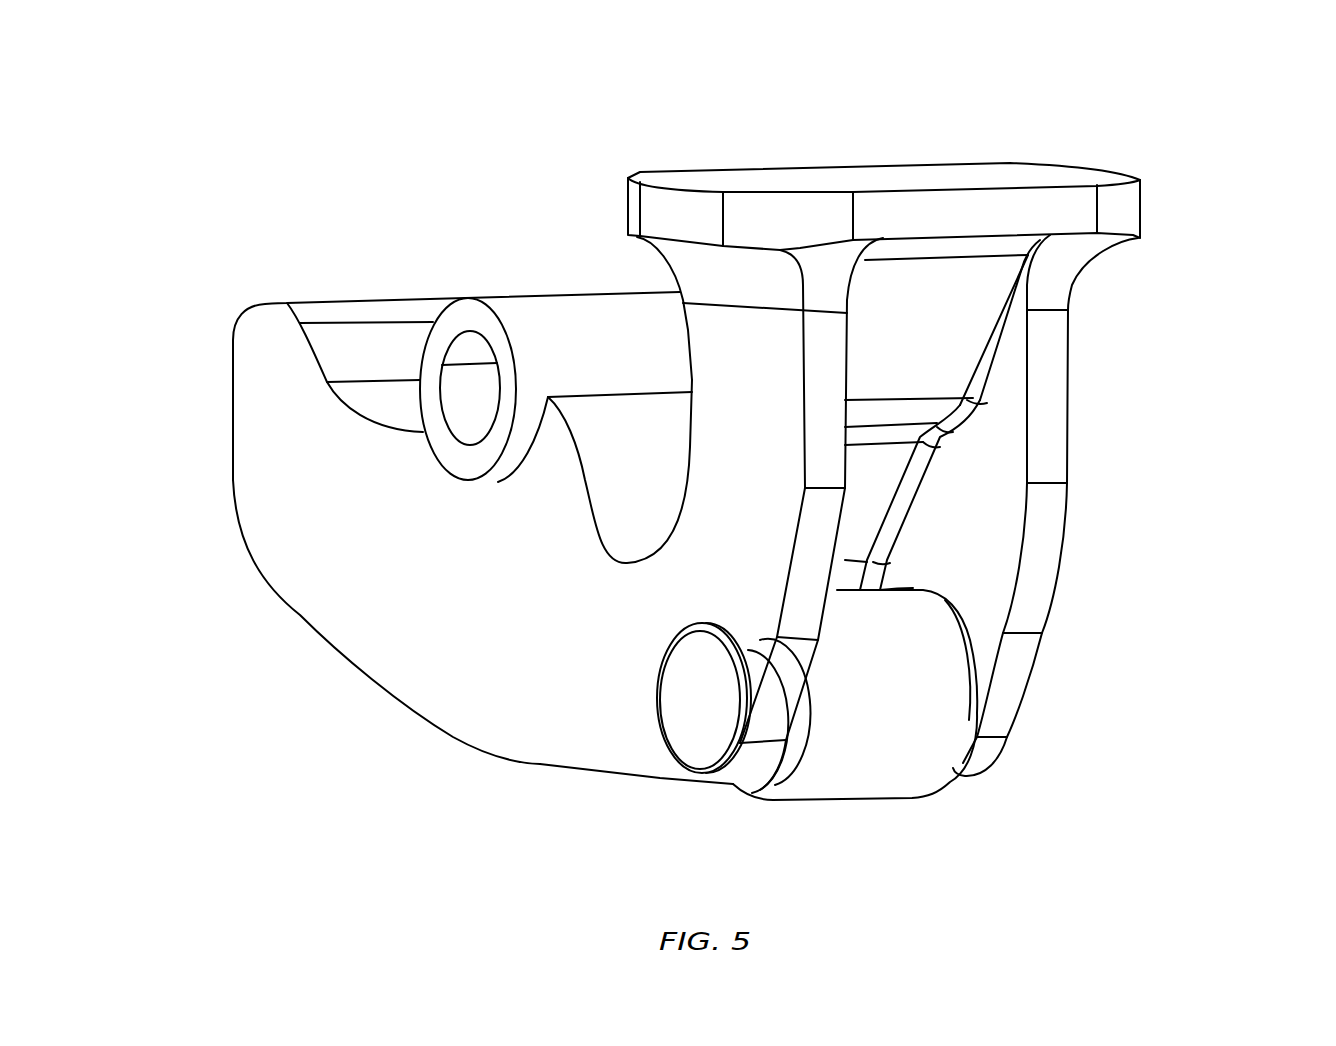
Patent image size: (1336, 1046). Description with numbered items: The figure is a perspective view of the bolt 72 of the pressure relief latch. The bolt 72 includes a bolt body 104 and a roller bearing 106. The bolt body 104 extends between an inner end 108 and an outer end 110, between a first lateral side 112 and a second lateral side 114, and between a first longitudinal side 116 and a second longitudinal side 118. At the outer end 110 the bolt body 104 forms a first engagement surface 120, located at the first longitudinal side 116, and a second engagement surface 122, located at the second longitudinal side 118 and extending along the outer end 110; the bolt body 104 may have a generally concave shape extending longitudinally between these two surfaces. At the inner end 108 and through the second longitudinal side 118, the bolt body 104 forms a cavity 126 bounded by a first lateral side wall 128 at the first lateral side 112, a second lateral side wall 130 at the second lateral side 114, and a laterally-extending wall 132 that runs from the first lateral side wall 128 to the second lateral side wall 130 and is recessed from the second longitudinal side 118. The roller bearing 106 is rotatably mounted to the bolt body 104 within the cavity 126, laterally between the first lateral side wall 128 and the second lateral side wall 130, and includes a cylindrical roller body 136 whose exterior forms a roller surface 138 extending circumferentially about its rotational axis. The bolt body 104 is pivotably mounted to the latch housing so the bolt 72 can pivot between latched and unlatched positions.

The bolt 72 is at (1222, 119).
The outer end 110 is at (616, 138).
The second engagement surface 122 is at (980, 172).
The second lateral side wall 130 is at (717, 333).
The second longitudinal side 118 is at (1168, 251).
The first lateral side 112 is at (1095, 488).
The first lateral side wall 128 is at (1045, 573).
The roller surface 138 is at (993, 763).
The cavity 126 is at (1003, 420).
The laterally-extending wall 132 is at (986, 313).
The first longitudinal side 116 is at (205, 415).
The first engagement surface 120 is at (303, 307).
The bolt body 104 is at (380, 343).
The second lateral side 114 is at (398, 641).
The inner end 108 is at (614, 795).
The roller bearing 106 is at (870, 817).
The roller body 136 is at (761, 795).